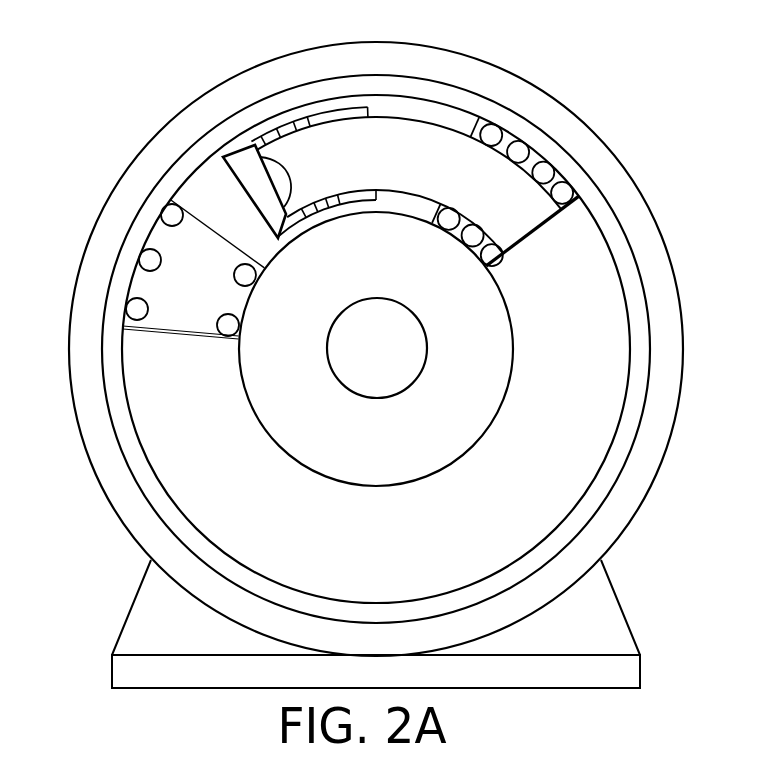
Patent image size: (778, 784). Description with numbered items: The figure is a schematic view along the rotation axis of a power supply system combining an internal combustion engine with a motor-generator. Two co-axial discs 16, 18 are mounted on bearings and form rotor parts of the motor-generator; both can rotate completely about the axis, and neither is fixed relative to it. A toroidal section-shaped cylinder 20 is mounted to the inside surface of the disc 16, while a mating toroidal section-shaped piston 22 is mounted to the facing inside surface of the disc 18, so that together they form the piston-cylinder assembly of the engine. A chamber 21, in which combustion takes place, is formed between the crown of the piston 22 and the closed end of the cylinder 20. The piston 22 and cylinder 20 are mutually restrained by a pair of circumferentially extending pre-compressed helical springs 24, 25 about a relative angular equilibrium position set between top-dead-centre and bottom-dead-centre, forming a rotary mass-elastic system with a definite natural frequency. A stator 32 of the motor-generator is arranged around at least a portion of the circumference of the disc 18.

The disc 16 is at (585, 364).
The disc 18 is at (262, 402).
The toroidal section-shaped cylinder 20 is at (233, 167).
The chamber 21 is at (252, 192).
The toroidal section-shaped piston 22 is at (425, 134).
The pre-compressed helical spring 24 is at (148, 258).
The pre-compressed helical spring 25 is at (568, 192).
The stator 32 is at (573, 131).